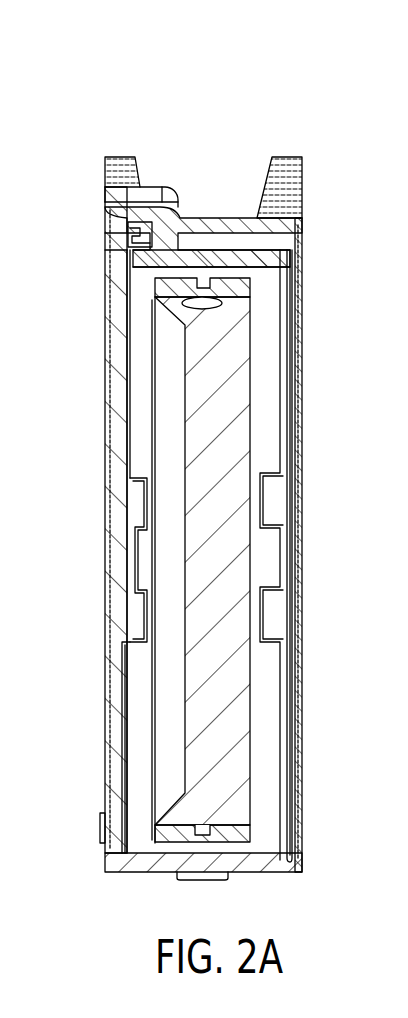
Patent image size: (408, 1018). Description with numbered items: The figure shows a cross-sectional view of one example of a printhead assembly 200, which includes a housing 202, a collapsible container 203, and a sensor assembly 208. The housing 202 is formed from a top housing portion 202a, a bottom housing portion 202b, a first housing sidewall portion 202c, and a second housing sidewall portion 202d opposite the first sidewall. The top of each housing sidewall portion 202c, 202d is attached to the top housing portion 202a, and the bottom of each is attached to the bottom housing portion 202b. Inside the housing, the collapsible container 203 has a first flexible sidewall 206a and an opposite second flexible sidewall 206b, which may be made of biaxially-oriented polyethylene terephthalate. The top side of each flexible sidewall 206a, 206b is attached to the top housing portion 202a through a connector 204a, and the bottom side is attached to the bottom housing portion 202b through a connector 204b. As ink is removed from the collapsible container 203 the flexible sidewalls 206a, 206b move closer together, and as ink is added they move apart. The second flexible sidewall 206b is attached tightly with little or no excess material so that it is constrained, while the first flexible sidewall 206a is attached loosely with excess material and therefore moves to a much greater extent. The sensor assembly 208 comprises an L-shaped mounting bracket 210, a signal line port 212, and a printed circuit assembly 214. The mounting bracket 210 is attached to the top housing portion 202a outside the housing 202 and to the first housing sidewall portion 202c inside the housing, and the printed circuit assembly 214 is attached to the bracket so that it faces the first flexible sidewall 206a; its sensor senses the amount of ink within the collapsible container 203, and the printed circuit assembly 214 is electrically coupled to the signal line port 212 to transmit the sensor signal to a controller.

The printhead assembly 200 is at (207, 80).
The housing 202 is at (303, 562).
The top housing portion 202a is at (277, 260).
The bottom housing portion 202b is at (272, 866).
The first housing sidewall portion 202c is at (105, 440).
The second housing sidewall portion 202d is at (296, 455).
The collapsible container 203 is at (255, 688).
The connector 204a is at (250, 288).
The connector 204b is at (242, 832).
The first flexible sidewall 206a is at (183, 352).
The second flexible sidewall 206b is at (252, 390).
The sensor assembly 208 is at (100, 238).
The mounting bracket 210 is at (120, 284).
The signal line port 212 is at (130, 192).
The printed circuit assembly 214 is at (125, 560).